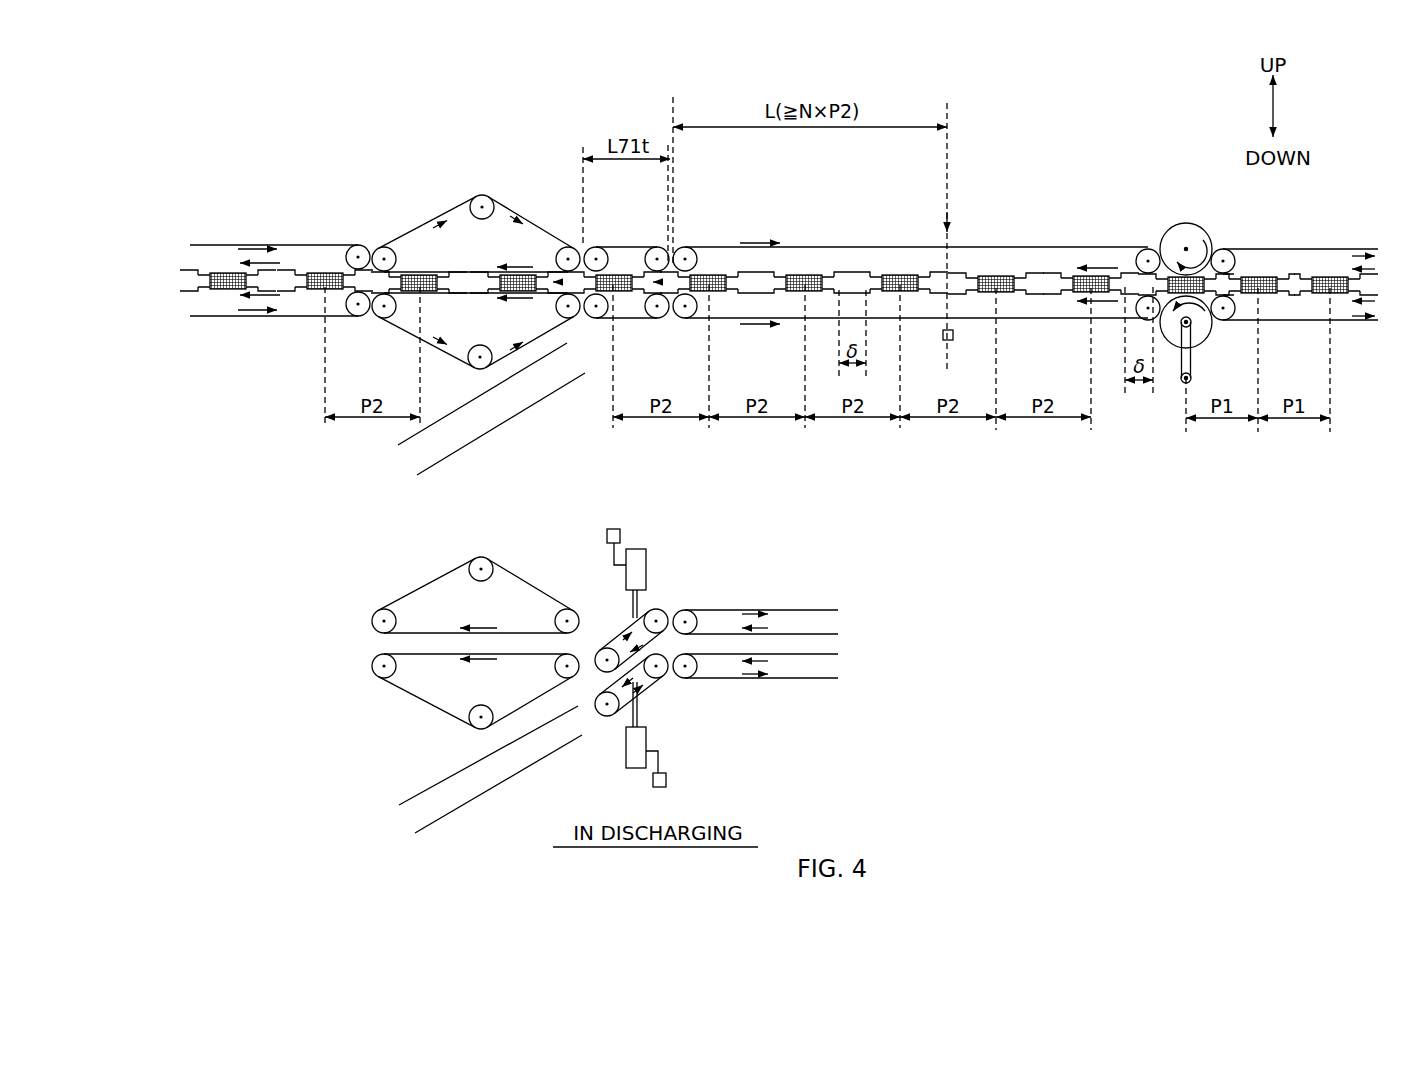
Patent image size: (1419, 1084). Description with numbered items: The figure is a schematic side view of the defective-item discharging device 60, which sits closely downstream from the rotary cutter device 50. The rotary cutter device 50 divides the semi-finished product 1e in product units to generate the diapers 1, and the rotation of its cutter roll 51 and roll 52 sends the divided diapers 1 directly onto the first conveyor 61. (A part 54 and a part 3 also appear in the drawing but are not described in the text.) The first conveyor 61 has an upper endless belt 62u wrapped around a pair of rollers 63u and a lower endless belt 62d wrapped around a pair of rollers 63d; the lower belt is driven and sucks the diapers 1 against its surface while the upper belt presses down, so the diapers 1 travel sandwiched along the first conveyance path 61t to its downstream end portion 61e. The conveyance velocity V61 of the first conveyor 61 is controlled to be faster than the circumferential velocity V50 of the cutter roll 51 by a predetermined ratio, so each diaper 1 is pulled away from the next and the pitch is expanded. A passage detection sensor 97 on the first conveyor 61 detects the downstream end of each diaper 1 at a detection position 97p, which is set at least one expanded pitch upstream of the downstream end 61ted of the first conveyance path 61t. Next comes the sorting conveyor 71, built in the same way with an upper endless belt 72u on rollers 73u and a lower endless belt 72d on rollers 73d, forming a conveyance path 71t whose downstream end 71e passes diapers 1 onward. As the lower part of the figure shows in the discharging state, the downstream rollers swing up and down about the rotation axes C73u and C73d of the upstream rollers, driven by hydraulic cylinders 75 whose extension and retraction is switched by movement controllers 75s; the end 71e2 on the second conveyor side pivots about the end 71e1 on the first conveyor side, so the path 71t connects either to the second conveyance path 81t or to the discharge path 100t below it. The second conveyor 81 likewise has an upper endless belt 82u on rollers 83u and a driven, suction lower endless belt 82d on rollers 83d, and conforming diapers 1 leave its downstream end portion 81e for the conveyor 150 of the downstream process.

The conveyor of the downstream process 150 is at (310, 228).
The diaper 1 is at (327, 273).
The second conveyor 81 is at (470, 434).
The second conveyance path 81t is at (563, 268).
The downstream end portion of the second conveyance path 81e is at (370, 322).
The rollers of the upper endless belt of the second conveyor 83u is at (397, 252).
The upper endless belt of the second conveyor 82u is at (465, 272).
The rollers of the lower endless belt of the second conveyor 83d is at (557, 306).
The lower endless belt of the second conveyor 82d is at (475, 294).
The sorting conveyor 71 is at (664, 487).
The conveyance path of the sorting conveyor 71t is at (653, 245).
The downstream end of the sorting conveyor conveyance path 71e is at (582, 323).
The end of the conveyance path on the first conveyor side 71e1 is at (671, 657).
The end of the conveyance path on the second conveyor side 71e2 is at (603, 683).
The rollers of the upper endless belt of the sorting conveyor 73u is at (596, 247).
The rollers of the lower endless belt of the sorting conveyor 73d is at (592, 318).
The upper endless belt of the sorting conveyor 72u is at (623, 627).
The lower endless belt of the sorting conveyor 72d is at (630, 247).
The rotation axis of the upstream upper roller C73u is at (663, 612).
The rotation axis of the upstream lower roller C73d is at (661, 678).
The hydraulic cylinder 75 is at (640, 556).
The movement controller 75s is at (607, 536).
The defective-item discharging device 60 is at (911, 359).
The first conveyor 61 is at (911, 359).
The first conveyance path 61t is at (1130, 253).
The downstream end portion of the first conveyance path 61e is at (671, 322).
The downstream end of the first conveyance path 61ted is at (673, 97).
The rollers of the upper endless belt of the first conveyor 63u is at (688, 248).
The rollers of the lower endless belt of the first conveyor 63d is at (689, 320).
The upper endless belt of the first conveyor 62u is at (1038, 247).
The lower endless belt of the first conveyor 62d is at (1030, 322).
The conveyance velocity of the first conveyor V61 is at (1106, 264).
The rotary cutter device 50 is at (1213, 267).
The cutter roll 51 is at (1194, 232).
The roll of the rotary cutter device 52 is at (1198, 333).
The pivot of lower ejection roller arm 54 is at (1192, 378).
The circumferential velocity of the cutter roll V50 is at (1204, 240).
The downstream conveyor 3 is at (1294, 256).
The semi-finished product 1e is at (1292, 277).
The passage detection sensor 97 is at (943, 340).
The detection position 97p is at (951, 228).
The discharge path 100t is at (492, 408).